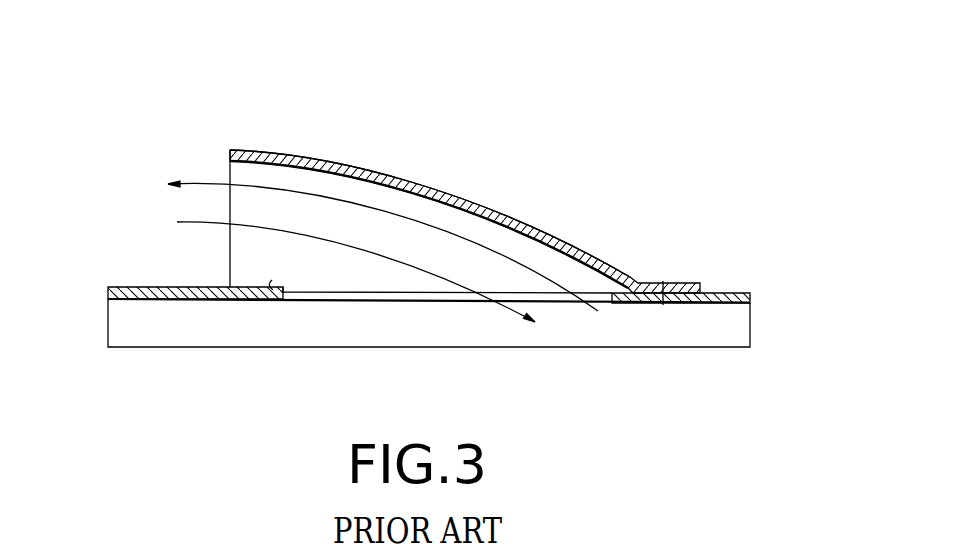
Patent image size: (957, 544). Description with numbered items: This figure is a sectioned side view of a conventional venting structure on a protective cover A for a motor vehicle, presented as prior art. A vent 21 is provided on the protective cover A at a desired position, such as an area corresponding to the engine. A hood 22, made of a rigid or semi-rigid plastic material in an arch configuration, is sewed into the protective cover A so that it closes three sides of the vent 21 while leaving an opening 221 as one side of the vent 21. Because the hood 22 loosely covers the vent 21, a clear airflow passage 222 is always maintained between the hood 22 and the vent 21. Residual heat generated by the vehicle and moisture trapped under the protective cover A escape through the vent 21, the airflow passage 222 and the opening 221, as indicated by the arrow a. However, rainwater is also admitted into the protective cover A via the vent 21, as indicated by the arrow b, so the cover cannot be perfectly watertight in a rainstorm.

The vent 21 is at (345, 295).
The hood 22 is at (520, 220).
The opening 221 is at (236, 169).
The airflow passage 222 is at (415, 203).
The protective cover A is at (730, 292).
The arrow a is at (370, 238).
The arrow b is at (367, 283).